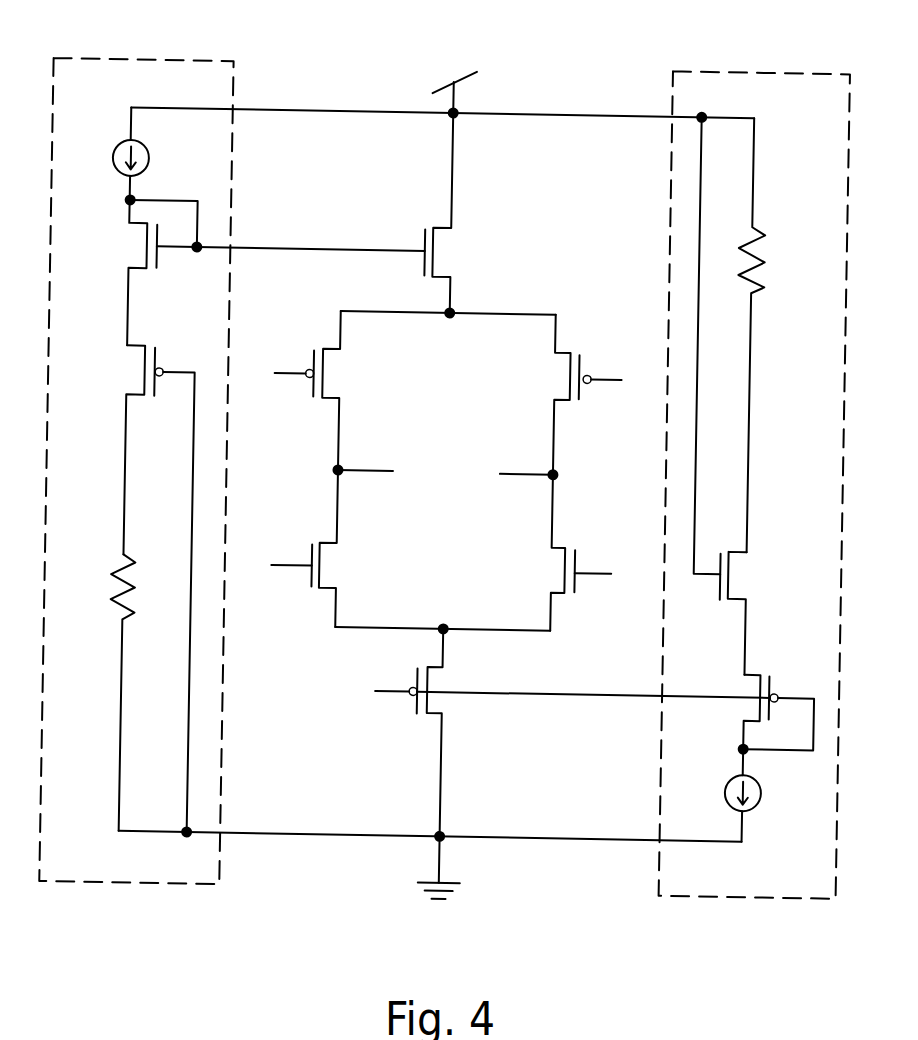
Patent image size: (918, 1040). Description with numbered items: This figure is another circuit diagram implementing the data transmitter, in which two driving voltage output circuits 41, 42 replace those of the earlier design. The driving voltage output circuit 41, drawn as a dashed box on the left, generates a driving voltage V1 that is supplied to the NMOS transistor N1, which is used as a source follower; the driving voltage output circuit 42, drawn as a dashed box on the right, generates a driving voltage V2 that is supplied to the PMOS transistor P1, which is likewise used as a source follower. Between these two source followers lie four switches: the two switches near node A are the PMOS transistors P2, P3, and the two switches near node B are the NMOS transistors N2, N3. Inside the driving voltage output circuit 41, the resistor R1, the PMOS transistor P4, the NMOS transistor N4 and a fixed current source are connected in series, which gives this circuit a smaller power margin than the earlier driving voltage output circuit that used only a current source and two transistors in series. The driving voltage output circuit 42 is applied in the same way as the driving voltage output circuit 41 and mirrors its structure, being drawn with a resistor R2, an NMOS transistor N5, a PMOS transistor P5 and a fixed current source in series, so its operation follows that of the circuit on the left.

The driving voltage output circuit 41 is at (145, 63).
The driving voltage output circuit 42 is at (763, 64).
The NMOS transistor N1 is at (351, 211).
The NMOS transistor N2 is at (330, 548).
The NMOS transistor N3 is at (560, 553).
The NMOS transistor N4 is at (149, 272).
The NMOS transistor N5 (x1) N5 is at (751, 614).
The PMOS transistor P1 is at (572, 735).
The PMOS transistor P2 is at (333, 390).
The PMOS transistor P3 is at (566, 395).
The PMOS transistor P4 is at (143, 588).
The PMOS transistor P5 (x1) P5 is at (757, 709).
The resistor R1 is at (101, 692).
The resistor R2 is at (768, 335).